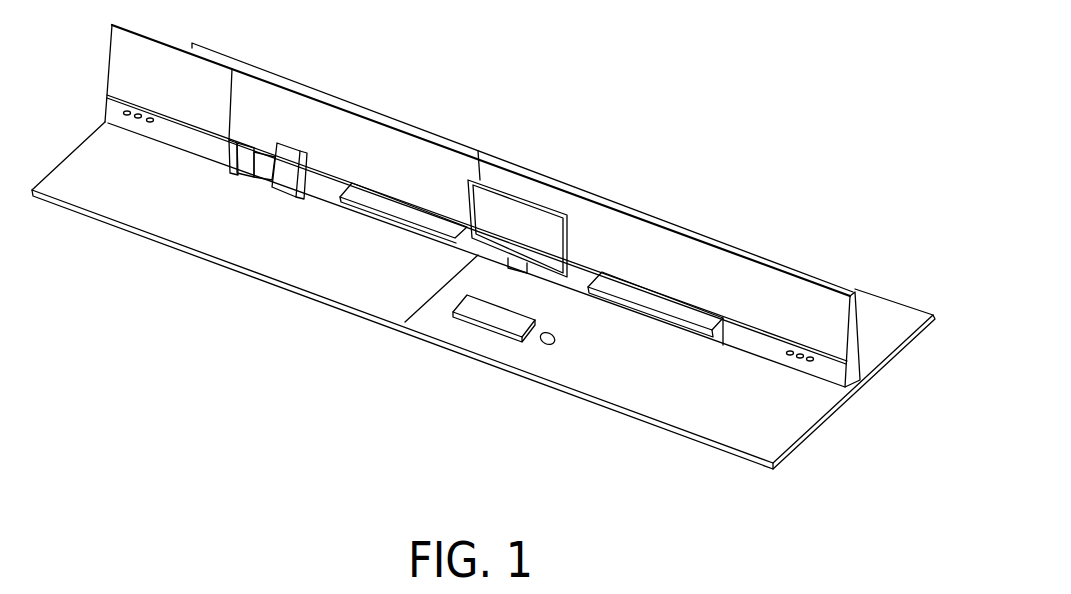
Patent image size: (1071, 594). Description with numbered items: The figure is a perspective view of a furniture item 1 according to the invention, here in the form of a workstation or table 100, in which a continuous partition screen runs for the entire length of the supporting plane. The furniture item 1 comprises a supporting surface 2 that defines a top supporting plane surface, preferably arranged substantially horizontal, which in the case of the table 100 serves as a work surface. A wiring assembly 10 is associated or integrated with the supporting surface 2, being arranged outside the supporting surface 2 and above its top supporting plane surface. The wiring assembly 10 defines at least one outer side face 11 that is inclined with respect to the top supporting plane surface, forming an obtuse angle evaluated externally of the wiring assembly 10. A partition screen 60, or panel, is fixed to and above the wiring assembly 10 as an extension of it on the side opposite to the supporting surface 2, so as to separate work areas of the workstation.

The furniture item 1 is at (850, 212).
The table 100 is at (403, 275).
The supporting surface 2 is at (887, 343).
The partition screen 60 is at (672, 263).
The wiring assembly 10 is at (827, 370).
The outer side face 11 is at (747, 342).